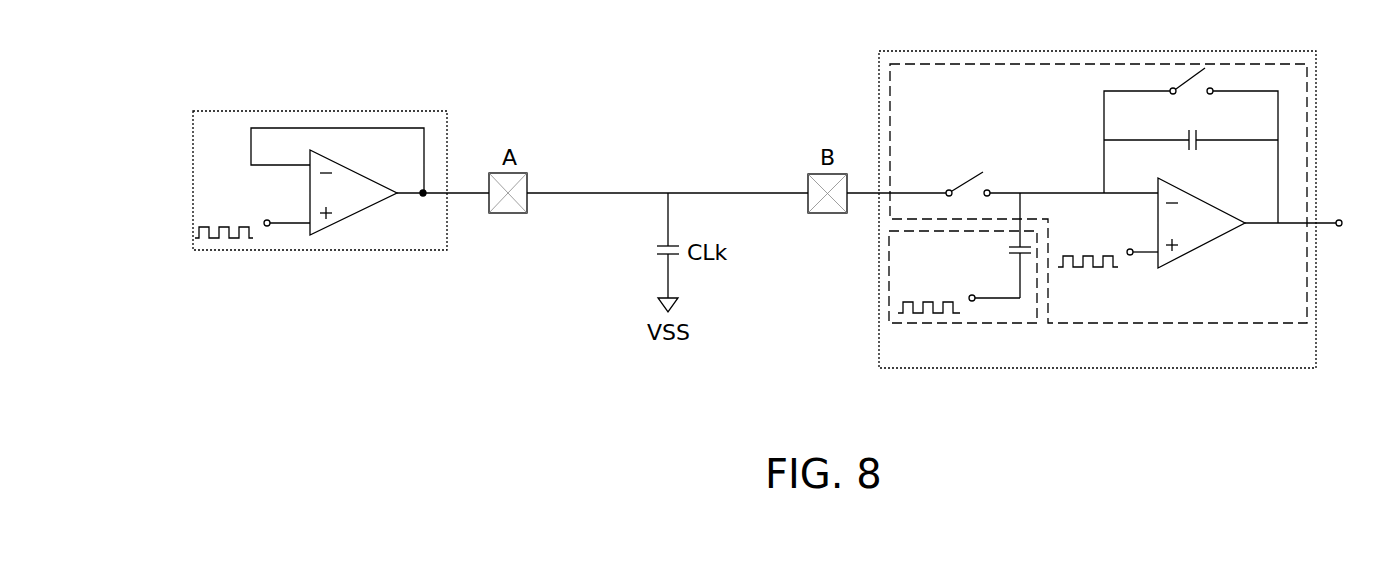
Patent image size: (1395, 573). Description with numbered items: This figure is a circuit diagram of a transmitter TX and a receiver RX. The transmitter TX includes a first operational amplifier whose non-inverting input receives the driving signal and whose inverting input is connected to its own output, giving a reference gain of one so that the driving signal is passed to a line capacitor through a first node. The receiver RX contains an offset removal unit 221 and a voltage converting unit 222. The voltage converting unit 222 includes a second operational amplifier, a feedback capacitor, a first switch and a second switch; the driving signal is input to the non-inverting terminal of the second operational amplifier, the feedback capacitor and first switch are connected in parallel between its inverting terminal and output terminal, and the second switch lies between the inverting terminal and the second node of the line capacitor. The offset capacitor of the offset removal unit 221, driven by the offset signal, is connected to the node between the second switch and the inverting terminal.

The offset removal unit 221 is at (1008, 324).
The voltage converting unit 222 is at (1258, 324).
The transmitter TX is at (312, 111).
The receiver RX is at (1200, 370).